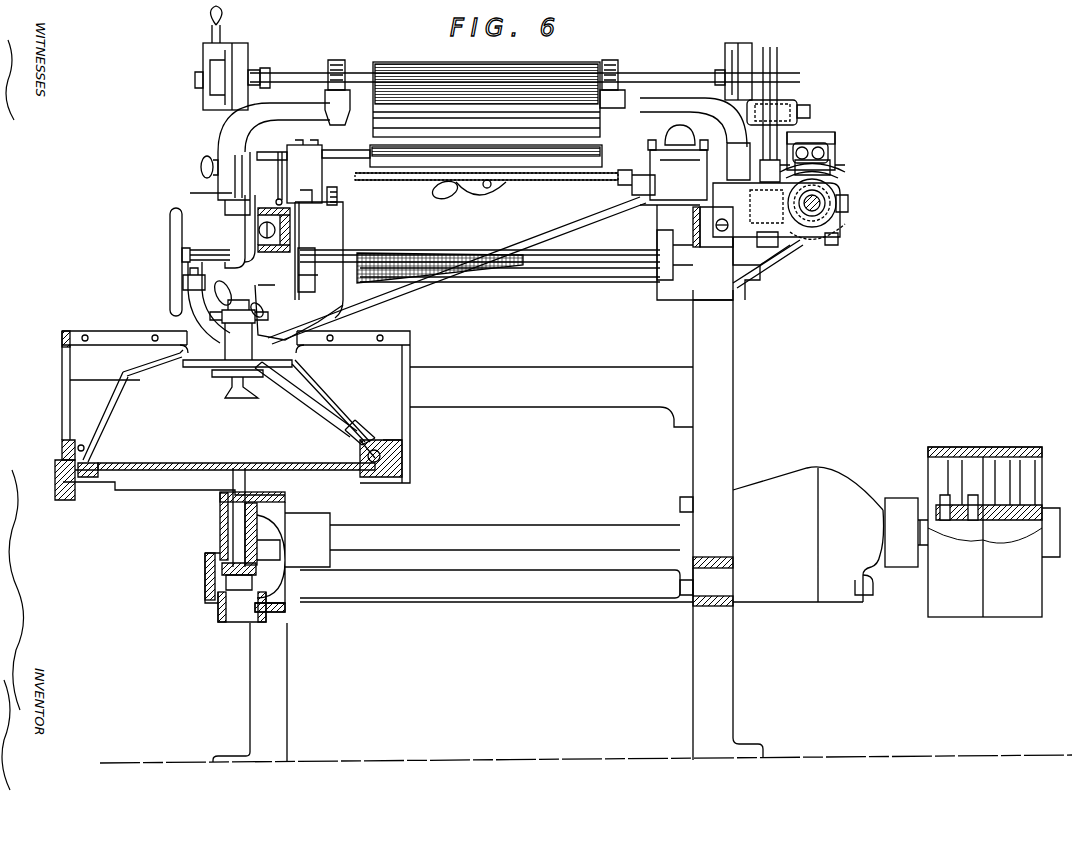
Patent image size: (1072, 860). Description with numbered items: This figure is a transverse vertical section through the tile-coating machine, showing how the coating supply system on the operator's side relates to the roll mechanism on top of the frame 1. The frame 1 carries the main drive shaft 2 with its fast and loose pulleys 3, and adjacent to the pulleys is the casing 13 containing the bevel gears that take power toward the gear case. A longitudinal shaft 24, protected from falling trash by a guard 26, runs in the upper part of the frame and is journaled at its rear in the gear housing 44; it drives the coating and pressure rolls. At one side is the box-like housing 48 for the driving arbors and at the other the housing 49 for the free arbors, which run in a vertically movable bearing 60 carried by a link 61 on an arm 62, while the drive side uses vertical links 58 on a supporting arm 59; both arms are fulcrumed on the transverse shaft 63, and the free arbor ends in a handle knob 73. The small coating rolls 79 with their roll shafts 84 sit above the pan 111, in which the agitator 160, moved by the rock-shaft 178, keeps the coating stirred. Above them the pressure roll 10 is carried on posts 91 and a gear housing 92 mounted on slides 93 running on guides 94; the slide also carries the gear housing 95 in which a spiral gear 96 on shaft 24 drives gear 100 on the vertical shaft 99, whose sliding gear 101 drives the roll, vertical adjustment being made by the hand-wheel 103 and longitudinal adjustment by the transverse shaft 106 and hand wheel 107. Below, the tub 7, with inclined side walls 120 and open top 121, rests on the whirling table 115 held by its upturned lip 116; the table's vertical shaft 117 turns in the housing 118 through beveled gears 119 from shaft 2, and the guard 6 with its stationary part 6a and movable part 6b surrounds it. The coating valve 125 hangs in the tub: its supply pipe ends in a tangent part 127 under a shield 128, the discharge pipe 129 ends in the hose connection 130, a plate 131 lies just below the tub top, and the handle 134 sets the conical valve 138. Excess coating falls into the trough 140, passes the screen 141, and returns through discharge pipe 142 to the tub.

The frame 1 is at (728, 525).
The main drive shaft 2 is at (545, 533).
The fast and loose pulleys 3 is at (995, 447).
The shield (guard) 6 is at (410, 348).
The stationary part of guard 6a is at (55, 470).
The movable part of guard 6b is at (62, 345).
The coating tube or tank (tub) 7 is at (134, 462).
The pressure roll 10 is at (488, 133).
The casing 13 is at (810, 470).
The longitudinal shaft 24 is at (838, 200).
The guard 26 is at (835, 165).
The gear housing 44 is at (840, 150).
The longitudinal housing 48 is at (676, 125).
The housing 49 is at (297, 145).
The vertical links 58 is at (662, 250).
The supporting arm 59 is at (676, 278).
The bearing 60 is at (268, 137).
The link 61 is at (305, 252).
The arm 62 is at (325, 335).
The transverse shaft 63 is at (595, 272).
The handle knob 73 is at (203, 160).
The small coating rolls 79 is at (548, 167).
The roll shafts 84 is at (340, 185).
The standards or posts 91 is at (236, 45).
The gear housing 92 is at (790, 100).
The slides 93 is at (218, 190).
The rails or guides 94 is at (185, 250).
The gear housing 95 is at (838, 182).
The spiral gear 96 is at (840, 222).
The vertical shaft 99 is at (782, 55).
The spiral gear 100 is at (820, 250).
The spiral gear 101 is at (800, 100).
The hand-wheel 103 is at (212, 25).
The transverse shaft 106 is at (185, 258).
The hand wheel 107 is at (170, 215).
The pan 111 is at (570, 182).
The rotary support or whirling table 115 is at (165, 492).
The upturned lip 116 is at (80, 478).
The vertical shaft 117 is at (232, 522).
The housing 118 is at (208, 580).
The beveled gears 119 is at (287, 605).
The inclined side walls 120 is at (110, 398).
The open top 121 is at (205, 345).
The coating valve (valve body) 125 is at (230, 380).
The tangent part of supply pipe 127 is at (392, 428).
The shield 128 is at (368, 425).
The discharge pipe 129 is at (195, 305).
The hose connection 130 is at (185, 290).
The plate 131 is at (198, 368).
The handle 134 is at (239, 291).
The conical valve 138 is at (265, 378).
The trough 140 is at (600, 222).
The screen 141 is at (420, 252).
The discharge pipe 142 is at (415, 312).
The agitator 160 is at (515, 195).
The rock-shaft 178 is at (305, 171).